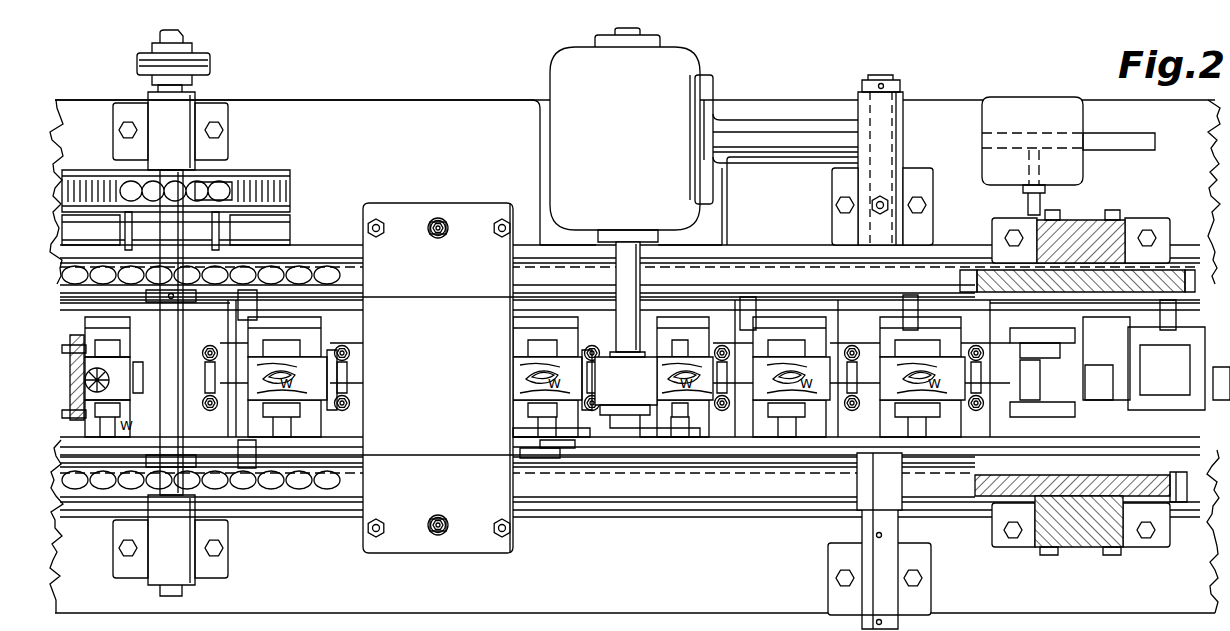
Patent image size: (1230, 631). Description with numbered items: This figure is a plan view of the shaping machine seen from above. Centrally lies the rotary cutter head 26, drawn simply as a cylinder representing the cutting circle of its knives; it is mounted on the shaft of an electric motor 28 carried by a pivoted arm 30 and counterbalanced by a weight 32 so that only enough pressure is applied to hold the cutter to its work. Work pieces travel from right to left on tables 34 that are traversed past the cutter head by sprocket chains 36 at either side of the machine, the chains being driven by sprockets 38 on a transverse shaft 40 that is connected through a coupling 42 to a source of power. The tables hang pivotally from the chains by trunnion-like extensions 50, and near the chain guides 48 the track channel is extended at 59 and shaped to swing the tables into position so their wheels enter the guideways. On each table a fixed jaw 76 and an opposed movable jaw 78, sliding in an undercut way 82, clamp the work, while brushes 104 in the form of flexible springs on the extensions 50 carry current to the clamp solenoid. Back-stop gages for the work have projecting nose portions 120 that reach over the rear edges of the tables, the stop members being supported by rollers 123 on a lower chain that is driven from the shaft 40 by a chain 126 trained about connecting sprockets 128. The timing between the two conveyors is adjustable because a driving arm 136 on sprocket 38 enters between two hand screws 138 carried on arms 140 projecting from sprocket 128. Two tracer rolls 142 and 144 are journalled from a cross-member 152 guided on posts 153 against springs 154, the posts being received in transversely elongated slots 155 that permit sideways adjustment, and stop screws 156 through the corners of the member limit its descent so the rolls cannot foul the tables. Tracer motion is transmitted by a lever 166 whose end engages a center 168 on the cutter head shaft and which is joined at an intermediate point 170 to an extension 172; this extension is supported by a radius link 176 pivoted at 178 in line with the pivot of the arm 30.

The rotary cutter head 26 is at (640, 380).
The electric motor 28 is at (563, 83).
The pivoted arm 30 is at (753, 128).
The weight 32 is at (1018, 107).
The tables 34 is at (321, 344).
The sprocket chains 36 is at (360, 250).
The sprockets 38 is at (348, 258).
The transverse shaft 40 is at (176, 90).
The coupling 42 is at (210, 62).
The chain guides 48 is at (1125, 218).
The trunnion-like extensions 50 is at (240, 296).
The channel extension 59 is at (1196, 472).
The fixed jaw 76 is at (285, 342).
The movable jaw 78 is at (100, 470).
The undercut way 82 is at (290, 470).
The brushes 104 is at (321, 330).
The nose portions 120 is at (600, 440).
The rollers 123 is at (70, 345).
The chain 126 is at (72, 183).
The connecting sprockets 128 is at (208, 188).
The driving arm 136 is at (140, 188).
The hand screws 138 is at (120, 238).
The arms 140 is at (125, 218).
The tracer roll 142 is at (513, 382).
The tracer roll 144 is at (332, 398).
The cross-member 152 is at (460, 445).
The posts 153 is at (430, 232).
The springs 154 is at (446, 224).
The transversely elongated slots 155 is at (438, 217).
The stop screws 156 is at (376, 219).
The lever 166 is at (520, 432).
The center 168 is at (632, 270).
The intermediate point 170 is at (558, 460).
The extension 172 is at (545, 468).
The radius link 176 is at (680, 440).
The pivot 178 is at (886, 518).